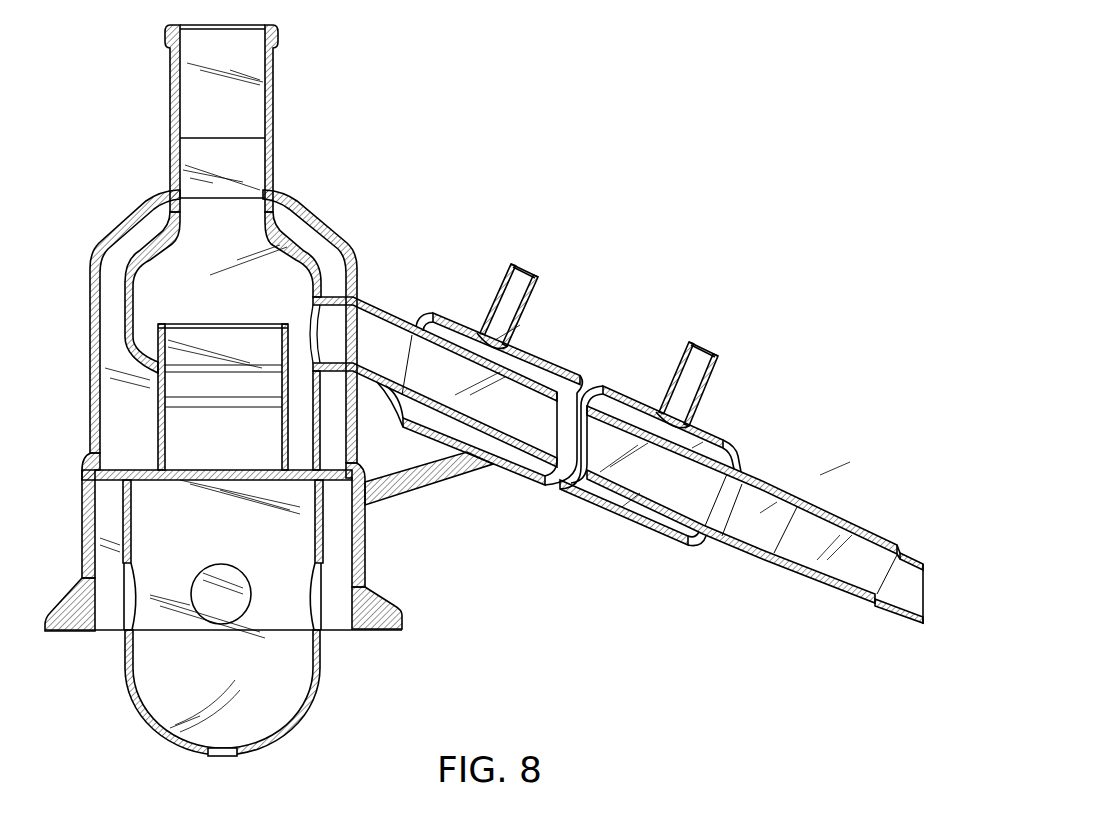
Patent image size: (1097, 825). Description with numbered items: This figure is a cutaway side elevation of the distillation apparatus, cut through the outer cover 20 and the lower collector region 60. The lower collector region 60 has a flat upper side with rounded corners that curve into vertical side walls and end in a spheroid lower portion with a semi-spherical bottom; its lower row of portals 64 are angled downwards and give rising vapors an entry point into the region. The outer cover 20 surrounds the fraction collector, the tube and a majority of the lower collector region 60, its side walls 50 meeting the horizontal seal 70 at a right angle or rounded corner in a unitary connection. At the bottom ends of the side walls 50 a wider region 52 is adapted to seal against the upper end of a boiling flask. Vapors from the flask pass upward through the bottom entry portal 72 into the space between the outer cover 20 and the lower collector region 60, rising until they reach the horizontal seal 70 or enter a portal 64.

The outer cover 20 is at (112, 277).
The side walls 50 is at (360, 528).
The wider region 52 is at (380, 603).
The lower collector region 60 is at (142, 517).
The lower row of portals 64 is at (132, 600).
The horizontal seal 70 is at (342, 475).
The bottom entry portal 72 is at (345, 632).